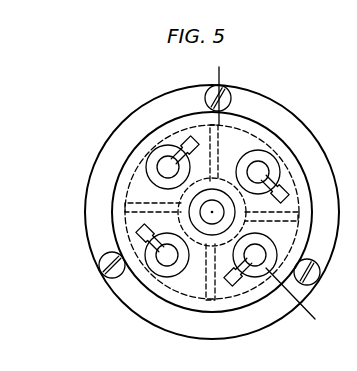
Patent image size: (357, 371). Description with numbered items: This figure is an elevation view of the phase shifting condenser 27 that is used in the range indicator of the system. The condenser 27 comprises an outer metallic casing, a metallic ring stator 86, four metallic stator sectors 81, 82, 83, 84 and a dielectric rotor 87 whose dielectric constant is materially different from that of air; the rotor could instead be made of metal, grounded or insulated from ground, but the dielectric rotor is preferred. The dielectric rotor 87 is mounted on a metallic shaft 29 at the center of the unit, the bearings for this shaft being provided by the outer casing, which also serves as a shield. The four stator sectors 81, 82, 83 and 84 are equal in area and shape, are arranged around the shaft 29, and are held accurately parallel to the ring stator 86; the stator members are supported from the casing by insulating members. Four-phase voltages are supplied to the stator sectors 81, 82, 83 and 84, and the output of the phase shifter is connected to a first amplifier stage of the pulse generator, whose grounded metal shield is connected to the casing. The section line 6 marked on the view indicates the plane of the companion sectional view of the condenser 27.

The phase shifting condenser 27 is at (291, 115).
The metallic shaft 29 is at (220, 212).
The metallic stator sector 81 is at (143, 173).
The metallic stator sector 82 is at (137, 233).
The metallic stator sector 83 is at (222, 288).
The metallic stator sector 84 is at (248, 143).
The metallic ring stator 86 is at (183, 126).
The dielectric rotor 87 is at (157, 217).
The section line 6- 6 is at (221, 75).